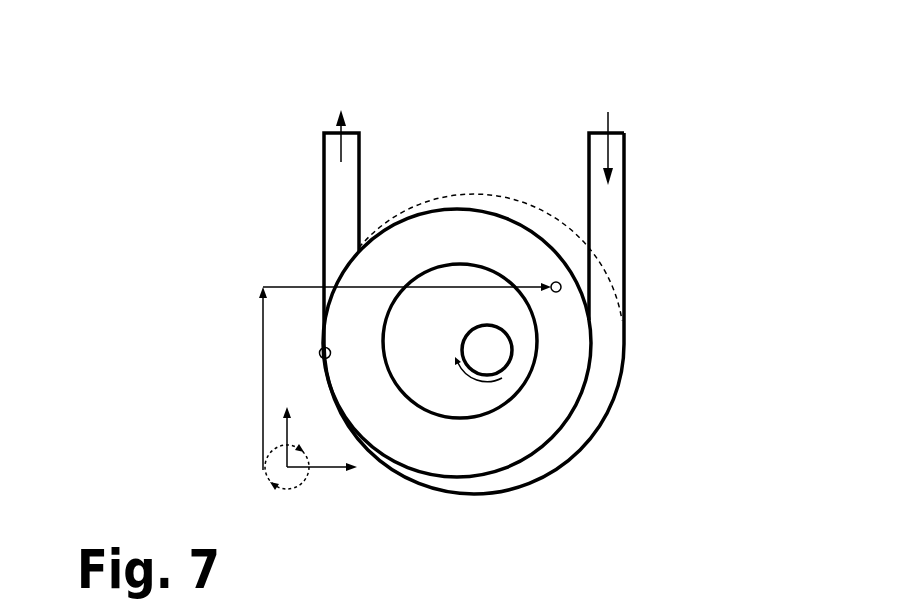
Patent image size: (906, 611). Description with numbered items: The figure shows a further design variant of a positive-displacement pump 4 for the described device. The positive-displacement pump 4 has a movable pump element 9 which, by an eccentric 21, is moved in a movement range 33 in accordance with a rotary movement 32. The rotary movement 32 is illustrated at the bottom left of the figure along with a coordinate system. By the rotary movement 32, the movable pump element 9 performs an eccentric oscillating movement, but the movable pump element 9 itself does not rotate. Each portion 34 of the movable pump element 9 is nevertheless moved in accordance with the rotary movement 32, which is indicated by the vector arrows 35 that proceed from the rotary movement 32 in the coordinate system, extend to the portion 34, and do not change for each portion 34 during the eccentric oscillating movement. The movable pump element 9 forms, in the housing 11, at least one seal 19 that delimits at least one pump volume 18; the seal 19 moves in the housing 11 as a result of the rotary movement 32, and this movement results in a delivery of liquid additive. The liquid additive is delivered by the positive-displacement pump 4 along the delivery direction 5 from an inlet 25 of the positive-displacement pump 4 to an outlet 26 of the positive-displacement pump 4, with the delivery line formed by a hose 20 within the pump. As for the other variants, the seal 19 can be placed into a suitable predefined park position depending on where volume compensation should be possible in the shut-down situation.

The positive-displacement pump 4 is at (698, 201).
The delivery direction 5 is at (343, 127).
The movable pump element 9 is at (535, 390).
The housing 11 is at (513, 490).
The pump volume 18 is at (602, 403).
The seal 19 is at (319, 353).
The hose 20 is at (627, 258).
The eccentric 21 is at (527, 293).
The inlet 25 is at (627, 142).
The outlet 26 is at (325, 139).
The rotary movement 32 is at (293, 487).
The movement range 33 is at (558, 220).
The portion 34 is at (561, 287).
The vector arrows 35 is at (302, 287).